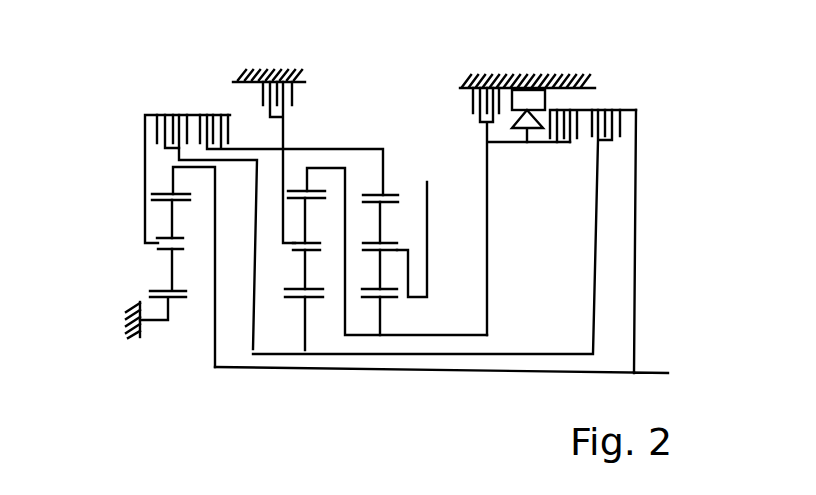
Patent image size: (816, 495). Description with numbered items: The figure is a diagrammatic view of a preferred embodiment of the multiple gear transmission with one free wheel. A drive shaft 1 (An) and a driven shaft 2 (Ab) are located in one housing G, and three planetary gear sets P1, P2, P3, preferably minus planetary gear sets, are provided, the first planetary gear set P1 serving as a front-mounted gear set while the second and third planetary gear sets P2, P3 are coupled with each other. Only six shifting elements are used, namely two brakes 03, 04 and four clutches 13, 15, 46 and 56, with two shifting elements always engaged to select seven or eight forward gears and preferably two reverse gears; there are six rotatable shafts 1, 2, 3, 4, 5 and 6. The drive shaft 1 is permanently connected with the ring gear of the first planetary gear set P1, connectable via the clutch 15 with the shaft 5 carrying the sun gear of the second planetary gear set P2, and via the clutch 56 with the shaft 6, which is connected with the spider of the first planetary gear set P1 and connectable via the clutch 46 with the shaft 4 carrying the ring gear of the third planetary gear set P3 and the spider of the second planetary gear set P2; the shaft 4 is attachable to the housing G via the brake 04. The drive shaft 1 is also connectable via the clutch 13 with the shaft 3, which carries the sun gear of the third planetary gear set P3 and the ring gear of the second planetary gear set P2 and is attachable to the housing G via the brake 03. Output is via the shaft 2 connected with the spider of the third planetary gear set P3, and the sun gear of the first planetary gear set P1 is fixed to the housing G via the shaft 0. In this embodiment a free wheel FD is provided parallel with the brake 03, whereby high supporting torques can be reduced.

The first planetary gear set P1 is at (165, 220).
The second planetary gear set P2 is at (338, 147).
The third planetary gear set P3 is at (390, 168).
The clutch 56 is at (206, 222).
The clutch 46 is at (291, 145).
The brake 04 is at (265, 162).
The brake 03 is at (508, 211).
The clutch 13 is at (593, 115).
The clutch 15 is at (439, 221).
The drive shaft 1 is at (171, 185).
The shaft 6 is at (177, 238).
The shaft 0 is at (163, 305).
The shaft 3 is at (342, 243).
The shaft 4 is at (346, 210).
The shaft 5 is at (304, 303).
The driven shaft 2 is at (384, 237).
The driven shaft Ab is at (447, 193).
The drive shaft An is at (450, 241).
The housing G is at (112, 326).
The free wheel FD is at (528, 116).